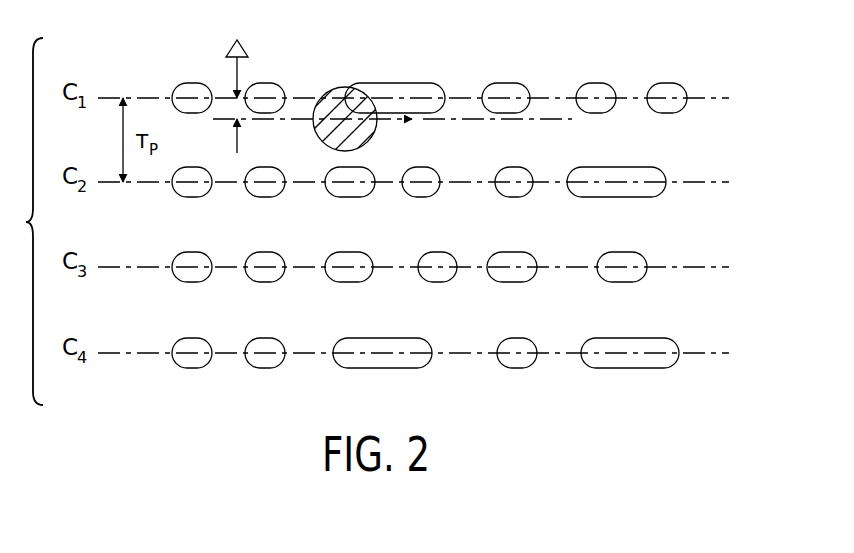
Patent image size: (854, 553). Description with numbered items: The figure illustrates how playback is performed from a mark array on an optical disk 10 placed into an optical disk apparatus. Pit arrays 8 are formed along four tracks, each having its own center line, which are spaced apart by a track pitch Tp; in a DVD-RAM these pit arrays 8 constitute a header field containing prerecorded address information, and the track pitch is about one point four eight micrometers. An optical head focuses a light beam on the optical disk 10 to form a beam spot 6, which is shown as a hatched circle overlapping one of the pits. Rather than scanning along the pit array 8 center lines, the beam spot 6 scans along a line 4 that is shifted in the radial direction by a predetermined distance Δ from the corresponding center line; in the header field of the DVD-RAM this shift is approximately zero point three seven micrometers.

The line 4 is at (549, 120).
The beam spot 6 is at (348, 87).
The pit array 8 is at (504, 83).
The optical disk 10 is at (684, 58).